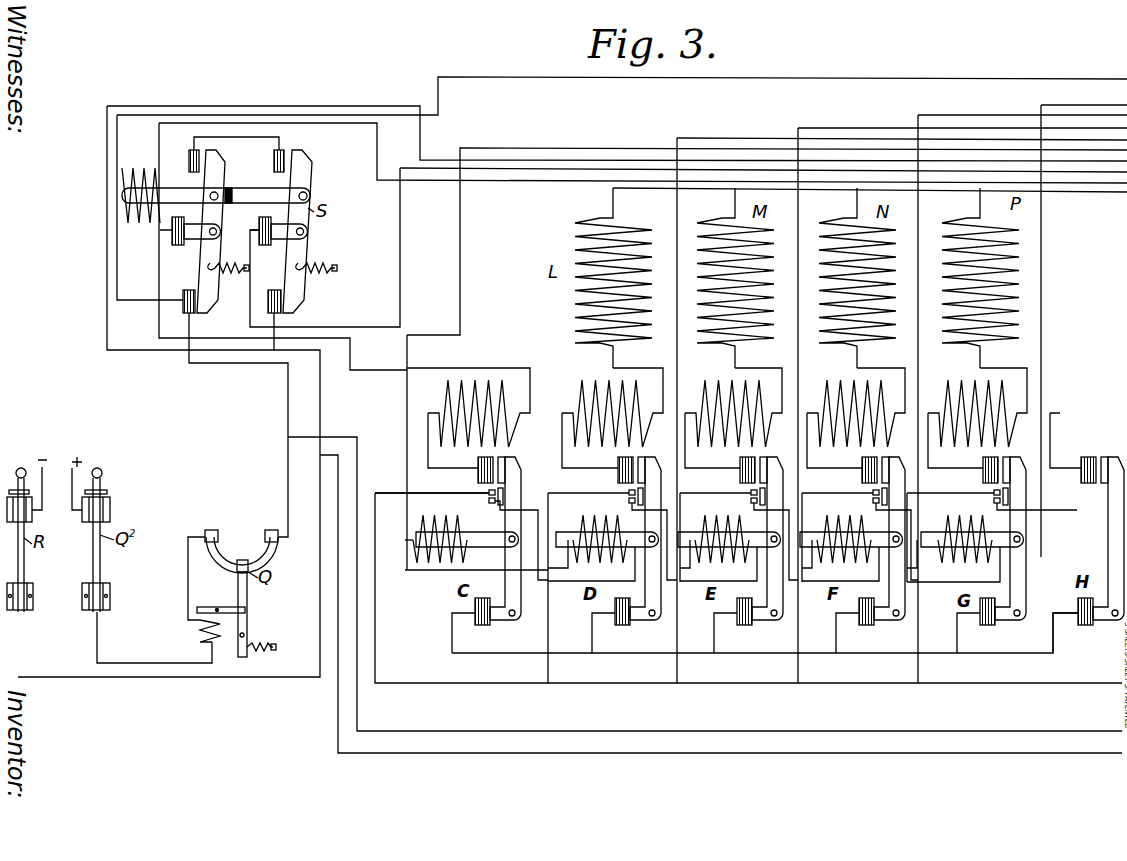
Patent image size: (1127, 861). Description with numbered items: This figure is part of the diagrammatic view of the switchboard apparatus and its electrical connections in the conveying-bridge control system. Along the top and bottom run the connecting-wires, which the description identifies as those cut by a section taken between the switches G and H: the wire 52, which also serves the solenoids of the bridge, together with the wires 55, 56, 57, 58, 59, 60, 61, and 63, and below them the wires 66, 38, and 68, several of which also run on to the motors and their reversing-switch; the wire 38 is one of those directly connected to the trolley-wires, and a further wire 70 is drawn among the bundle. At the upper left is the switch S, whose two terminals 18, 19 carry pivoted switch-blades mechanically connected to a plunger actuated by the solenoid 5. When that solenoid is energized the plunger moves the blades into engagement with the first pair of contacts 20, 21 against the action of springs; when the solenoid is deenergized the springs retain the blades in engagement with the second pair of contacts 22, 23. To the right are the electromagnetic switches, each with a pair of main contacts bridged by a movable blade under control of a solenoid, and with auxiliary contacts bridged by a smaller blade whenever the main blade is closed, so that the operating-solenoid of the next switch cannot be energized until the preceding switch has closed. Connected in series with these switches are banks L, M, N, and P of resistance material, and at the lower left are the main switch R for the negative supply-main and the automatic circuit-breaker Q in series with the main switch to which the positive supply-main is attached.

The solenoid 5 is at (141, 187).
The terminal 18 is at (196, 239).
The terminal 19 is at (283, 239).
The contact 20 is at (184, 160).
The contact 21 is at (274, 160).
The contact 22 is at (183, 294).
The contact 23 is at (271, 294).
The connecting-wire 38 is at (705, 584).
The connecting-wire 52 is at (622, 89).
The connecting-wire 55 is at (1084, 97).
The connecting-wire 56 is at (1022, 108).
The connecting-wire 57 is at (962, 121).
The connecting-wire 58 is at (902, 132).
The connecting-wire 59 is at (767, 235).
The connecting-wire 60 is at (617, 134).
The connecting-wire 61 is at (763, 165).
The connecting-wire 63 is at (870, 196).
The connecting-wire 66 is at (748, 588).
The connecting-wire 68 is at (721, 604).
The conductor 70 is at (643, 153).